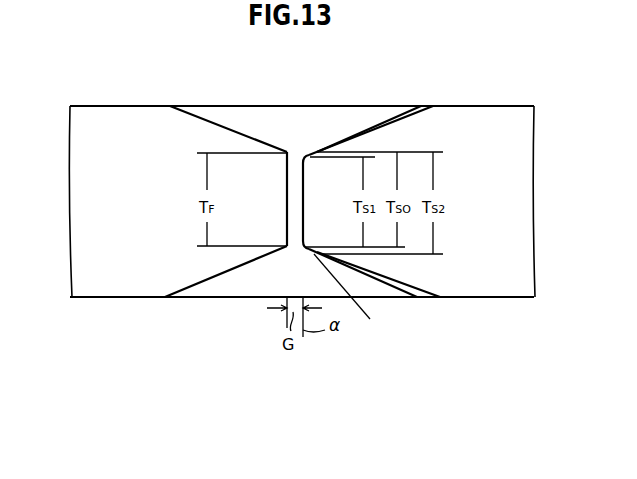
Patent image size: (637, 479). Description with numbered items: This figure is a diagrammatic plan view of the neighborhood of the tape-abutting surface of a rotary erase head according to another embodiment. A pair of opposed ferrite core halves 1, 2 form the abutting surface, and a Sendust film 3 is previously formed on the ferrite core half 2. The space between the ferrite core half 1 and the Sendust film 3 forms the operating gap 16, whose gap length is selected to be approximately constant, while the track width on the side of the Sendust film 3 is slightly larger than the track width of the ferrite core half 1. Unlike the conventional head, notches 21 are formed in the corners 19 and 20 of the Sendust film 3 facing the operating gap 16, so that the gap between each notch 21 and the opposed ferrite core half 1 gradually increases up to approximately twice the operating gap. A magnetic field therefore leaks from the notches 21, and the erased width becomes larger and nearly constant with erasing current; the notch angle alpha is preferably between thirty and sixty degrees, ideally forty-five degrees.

The ferrite core half 1 is at (80, 173).
The ferrite core half 2 is at (518, 158).
The Sendust film 3 is at (391, 121).
The operating gap 16 is at (293, 160).
The corner of Sendust film 19 is at (320, 150).
The corner of Sendust film 20 is at (318, 257).
The notch 21 is at (303, 160).